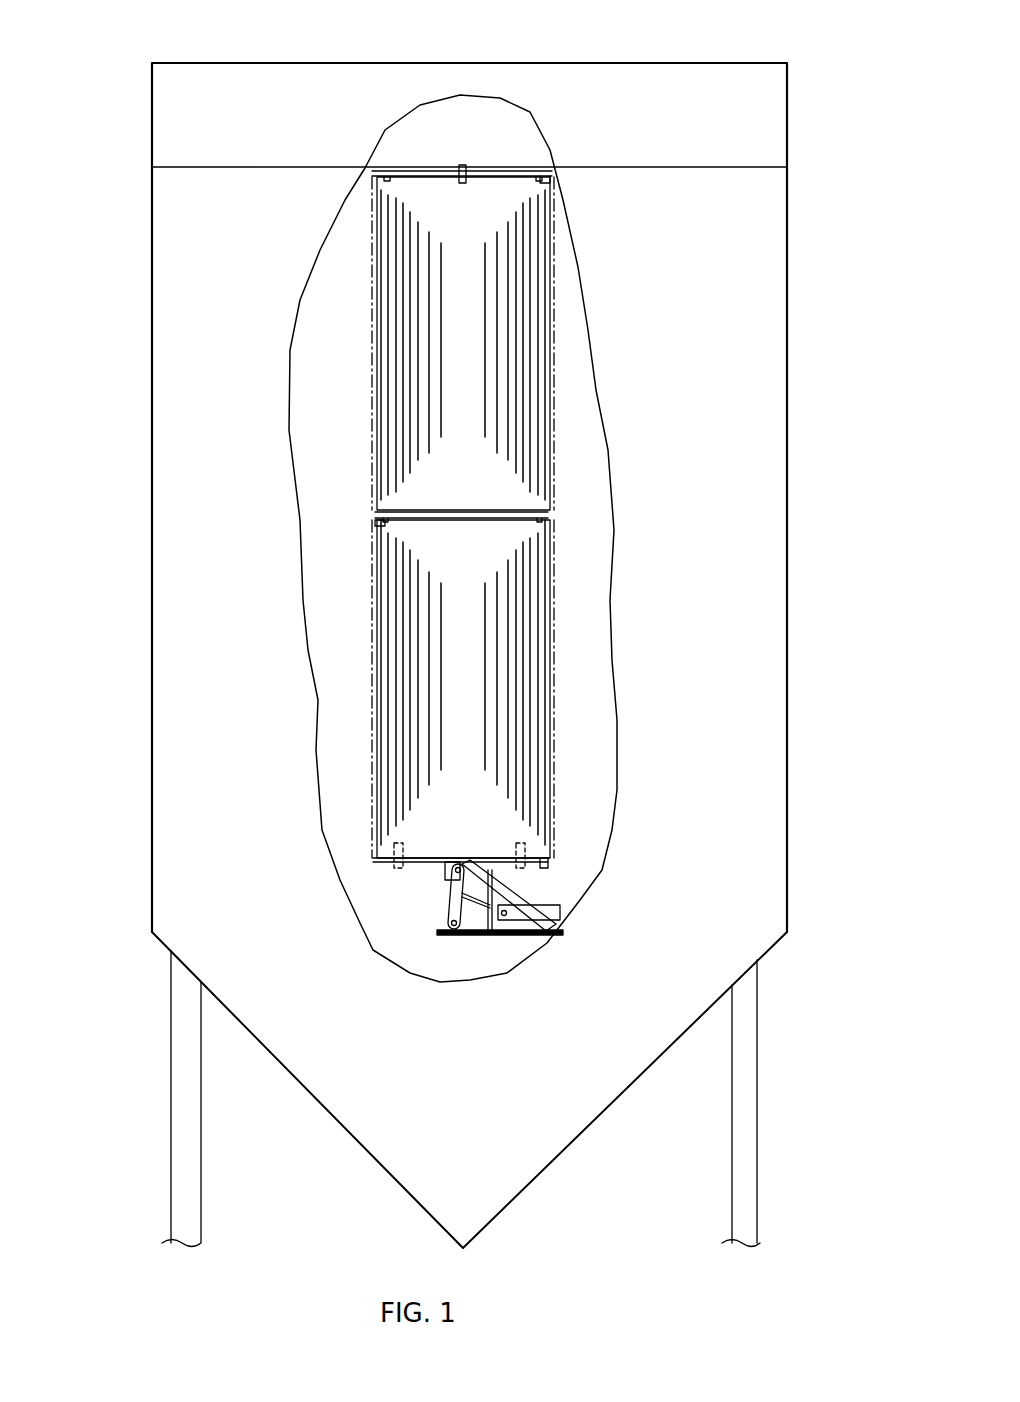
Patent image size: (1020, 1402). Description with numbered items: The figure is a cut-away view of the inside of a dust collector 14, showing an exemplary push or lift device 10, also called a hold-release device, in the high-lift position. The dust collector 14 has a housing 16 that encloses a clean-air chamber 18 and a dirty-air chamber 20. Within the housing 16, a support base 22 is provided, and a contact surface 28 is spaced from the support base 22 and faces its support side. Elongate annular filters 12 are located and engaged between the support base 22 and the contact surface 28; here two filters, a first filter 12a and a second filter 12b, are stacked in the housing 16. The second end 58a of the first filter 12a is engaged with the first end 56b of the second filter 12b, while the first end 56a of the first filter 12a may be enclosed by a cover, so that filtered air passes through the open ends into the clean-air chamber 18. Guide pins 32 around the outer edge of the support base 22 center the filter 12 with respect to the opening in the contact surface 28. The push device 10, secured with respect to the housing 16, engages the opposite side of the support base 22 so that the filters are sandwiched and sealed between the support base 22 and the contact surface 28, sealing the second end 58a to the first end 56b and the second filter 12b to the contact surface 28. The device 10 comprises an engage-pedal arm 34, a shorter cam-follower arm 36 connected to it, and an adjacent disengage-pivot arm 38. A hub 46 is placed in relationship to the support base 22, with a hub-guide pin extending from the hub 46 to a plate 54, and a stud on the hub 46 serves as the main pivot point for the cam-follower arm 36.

The push or lift device 10 is at (481, 922).
The filter 12 is at (461, 492).
The first filter 12a is at (548, 643).
The second filter 12b is at (552, 465).
The dust collector 14 is at (688, 52).
The housing 16 is at (152, 88).
The clean-air chamber 18 is at (222, 145).
The dirty-air chamber 20 is at (228, 258).
The support base 22 is at (373, 858).
The contact surface 28 is at (552, 170).
The guide pins 32 is at (397, 843).
The engage-pedal arm 34 is at (540, 880).
The cam-follower arm 36 is at (447, 910).
The disengage-pivot arm 38 is at (557, 907).
The hub 46 is at (447, 873).
The plate 54 is at (440, 935).
The first end of first filter 56a is at (545, 178).
The first end of second filter 56b is at (375, 512).
The second end of first filter 58a is at (375, 518).